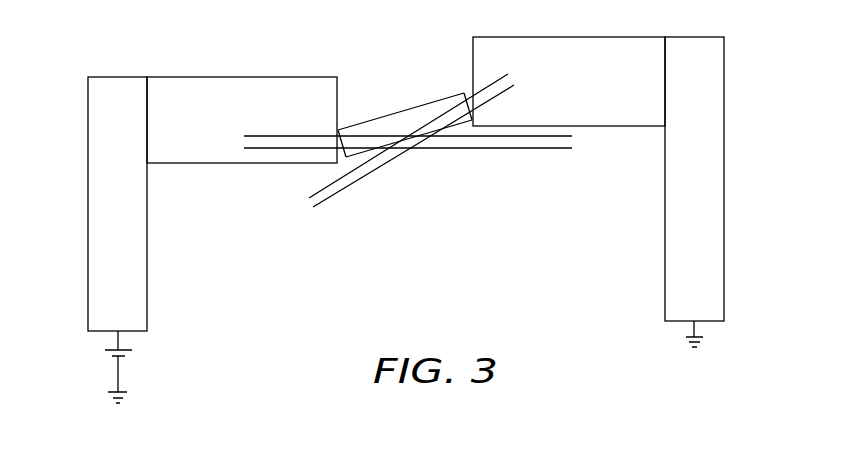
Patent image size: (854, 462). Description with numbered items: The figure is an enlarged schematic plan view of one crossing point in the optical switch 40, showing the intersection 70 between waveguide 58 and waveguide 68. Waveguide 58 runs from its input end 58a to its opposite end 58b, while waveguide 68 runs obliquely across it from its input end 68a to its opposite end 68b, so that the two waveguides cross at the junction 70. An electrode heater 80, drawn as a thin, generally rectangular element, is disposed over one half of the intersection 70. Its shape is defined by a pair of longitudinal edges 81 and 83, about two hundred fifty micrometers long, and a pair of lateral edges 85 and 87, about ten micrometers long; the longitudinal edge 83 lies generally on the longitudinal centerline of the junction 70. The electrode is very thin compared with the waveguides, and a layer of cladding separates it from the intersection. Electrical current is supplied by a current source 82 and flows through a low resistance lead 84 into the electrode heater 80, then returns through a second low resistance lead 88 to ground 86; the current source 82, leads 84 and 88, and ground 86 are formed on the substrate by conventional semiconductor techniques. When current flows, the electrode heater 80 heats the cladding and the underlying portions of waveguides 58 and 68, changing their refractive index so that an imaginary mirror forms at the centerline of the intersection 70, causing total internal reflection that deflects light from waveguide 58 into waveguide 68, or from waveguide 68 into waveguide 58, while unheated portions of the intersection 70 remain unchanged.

The optical switch 40 is at (459, 246).
The waveguide 58 is at (409, 151).
The input end of waveguide 58a is at (267, 142).
The output end of waveguide 58b is at (553, 142).
The waveguide 68 is at (432, 162).
The input end of waveguide 68a is at (325, 195).
The output end of waveguide 68b is at (495, 92).
The intersection 70 is at (414, 156).
The electrode heater 80 is at (405, 126).
The longitudinal edge 81 is at (372, 120).
The current source 82 is at (105, 355).
The longitudinal edge 83 is at (462, 129).
The lead 84 is at (91, 213).
The lateral edge 85 is at (467, 92).
The ground 86 is at (108, 396).
The lateral edge 87 is at (342, 160).
The lead 88 is at (719, 184).